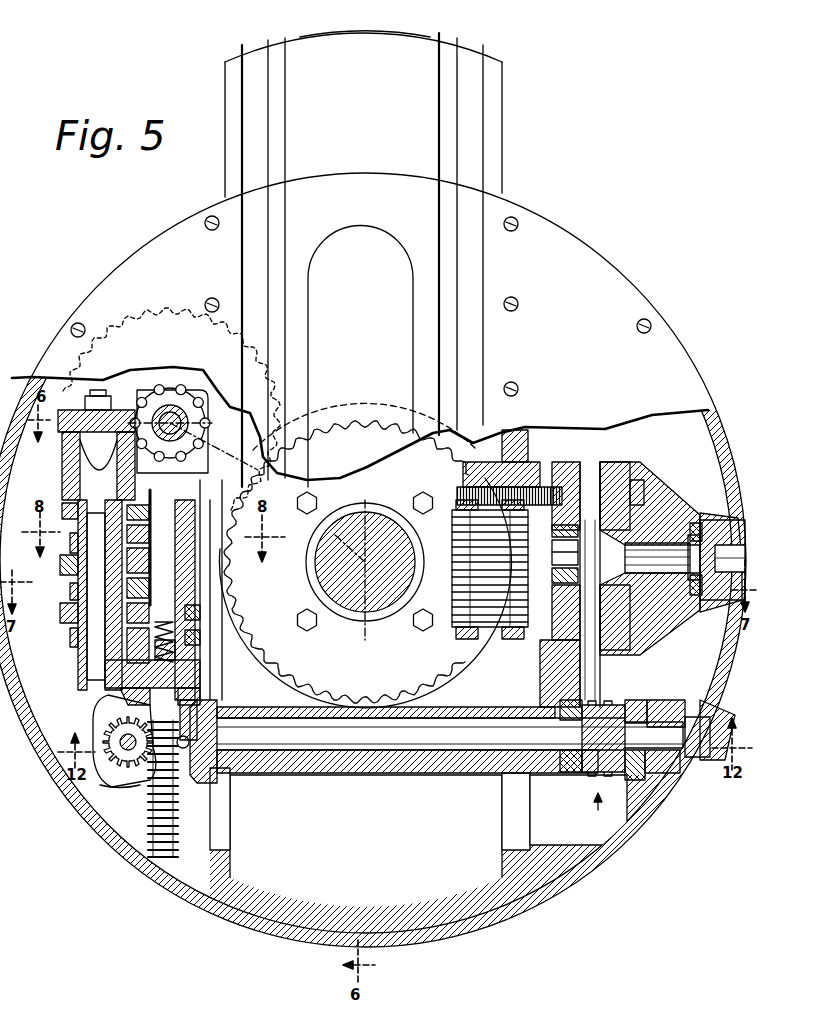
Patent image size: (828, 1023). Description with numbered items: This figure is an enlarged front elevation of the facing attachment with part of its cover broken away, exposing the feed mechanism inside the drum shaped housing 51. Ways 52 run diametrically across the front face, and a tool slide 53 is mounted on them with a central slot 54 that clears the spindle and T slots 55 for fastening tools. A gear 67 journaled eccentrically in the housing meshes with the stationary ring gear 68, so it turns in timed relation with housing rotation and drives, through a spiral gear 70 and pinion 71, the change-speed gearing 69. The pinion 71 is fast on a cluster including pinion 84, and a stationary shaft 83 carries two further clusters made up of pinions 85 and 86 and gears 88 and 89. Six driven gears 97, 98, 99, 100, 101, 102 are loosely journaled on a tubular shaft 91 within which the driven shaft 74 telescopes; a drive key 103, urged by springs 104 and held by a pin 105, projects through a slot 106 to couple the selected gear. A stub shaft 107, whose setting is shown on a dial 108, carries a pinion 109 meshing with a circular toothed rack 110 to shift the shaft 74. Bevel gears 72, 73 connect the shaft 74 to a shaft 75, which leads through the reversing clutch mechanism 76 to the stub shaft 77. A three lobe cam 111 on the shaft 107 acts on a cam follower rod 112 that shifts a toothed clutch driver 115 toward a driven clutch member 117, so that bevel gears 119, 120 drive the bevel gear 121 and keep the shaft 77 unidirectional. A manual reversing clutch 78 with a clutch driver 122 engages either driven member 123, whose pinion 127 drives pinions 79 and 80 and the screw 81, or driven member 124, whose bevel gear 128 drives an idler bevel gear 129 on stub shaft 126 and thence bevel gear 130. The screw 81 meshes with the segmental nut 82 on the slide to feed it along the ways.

The housing 51 is at (590, 868).
The ways 52 is at (232, 190).
The tool slide 53 is at (430, 45).
The central slot 54 is at (400, 228).
The T slots 55 is at (457, 55).
The gear 67 is at (170, 312).
The ring gear 68 is at (365, 408).
The change-speed gearing 69 is at (130, 597).
The spiral gear 70 is at (172, 390).
The pinion 71 is at (112, 410).
The bevel gear 72 is at (125, 720).
The bevel gear 73 is at (205, 784).
The driven shaft 74 is at (190, 738).
The shaft 75 is at (462, 772).
The reversing clutch mechanism 76 is at (600, 811).
The stub shaft 77 is at (630, 650).
The reversing clutch 78 is at (632, 510).
The pinion 79 is at (515, 487).
The pinion 80 is at (458, 510).
The screw 81 is at (415, 572).
The segmental nut 82 is at (62, 510).
The stationary shaft 83 is at (88, 650).
The pinion 84 is at (70, 545).
The pinion 85 is at (70, 595).
The pinion 86 is at (70, 640).
The gear 88 is at (60, 570).
The gear 89 is at (60, 615).
The tubular shaft 91 is at (182, 470).
The driven gear 97 is at (149, 512).
The driven gear 98 is at (149, 530).
The driven gear 99 is at (149, 556).
The driven gear 100 is at (149, 584).
The driven gear 101 is at (200, 612).
The driven gear 102 is at (200, 637).
The drive key 103 is at (135, 645).
The springs 104 is at (149, 608).
The pin 105 is at (176, 652).
The slot 106 is at (152, 540).
The stub shaft 107 is at (126, 752).
The dial 108 is at (160, 650).
The pinion 109 is at (96, 706).
The circular toothed rack 110 is at (148, 812).
The peripheral cam 111 is at (130, 787).
The cam follower rod 112 is at (183, 748).
The toothed clutch driver 115 is at (587, 773).
The driven clutch member 117 is at (630, 781).
The bevel gear 119 is at (562, 773).
The bevel gear 120 is at (650, 700).
The bevel gear 121 is at (636, 698).
The clutch driver 122 is at (556, 550).
The clutch driven member 123 is at (556, 530).
The clutch driven member 124 is at (560, 580).
The stub shaft 126 is at (695, 587).
The pinion 127 is at (625, 488).
The bevel gear 128 is at (640, 628).
The idler bevel gear 129 is at (665, 512).
The bevel gear 130 is at (660, 500).